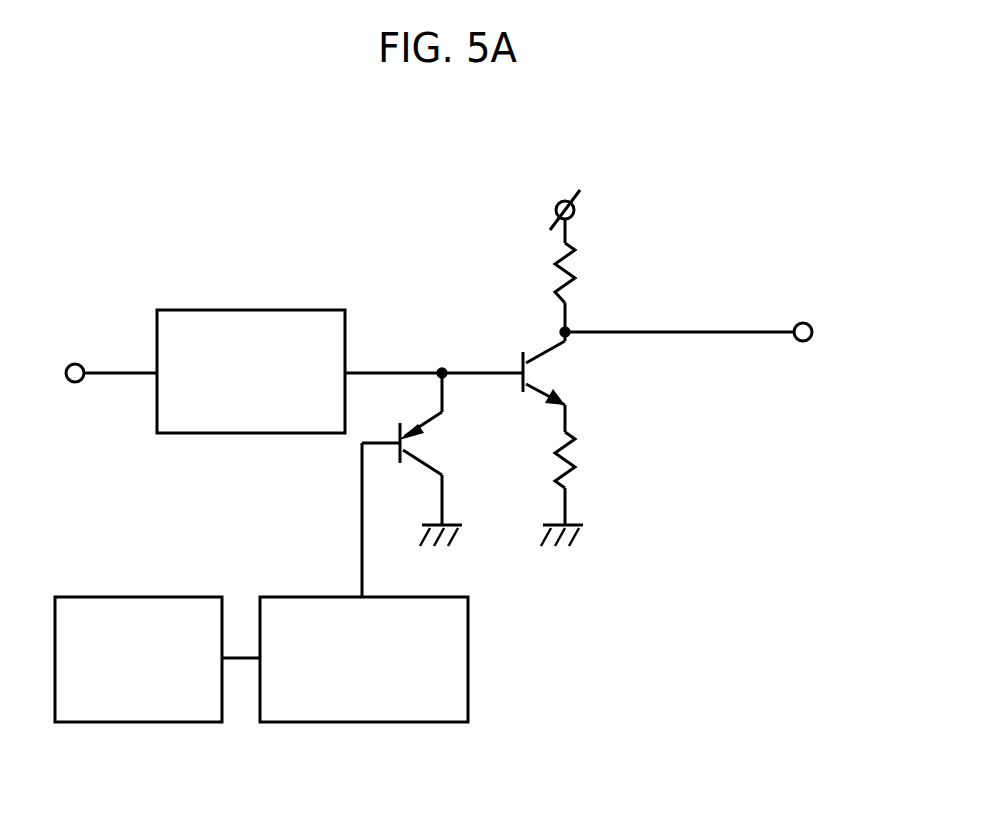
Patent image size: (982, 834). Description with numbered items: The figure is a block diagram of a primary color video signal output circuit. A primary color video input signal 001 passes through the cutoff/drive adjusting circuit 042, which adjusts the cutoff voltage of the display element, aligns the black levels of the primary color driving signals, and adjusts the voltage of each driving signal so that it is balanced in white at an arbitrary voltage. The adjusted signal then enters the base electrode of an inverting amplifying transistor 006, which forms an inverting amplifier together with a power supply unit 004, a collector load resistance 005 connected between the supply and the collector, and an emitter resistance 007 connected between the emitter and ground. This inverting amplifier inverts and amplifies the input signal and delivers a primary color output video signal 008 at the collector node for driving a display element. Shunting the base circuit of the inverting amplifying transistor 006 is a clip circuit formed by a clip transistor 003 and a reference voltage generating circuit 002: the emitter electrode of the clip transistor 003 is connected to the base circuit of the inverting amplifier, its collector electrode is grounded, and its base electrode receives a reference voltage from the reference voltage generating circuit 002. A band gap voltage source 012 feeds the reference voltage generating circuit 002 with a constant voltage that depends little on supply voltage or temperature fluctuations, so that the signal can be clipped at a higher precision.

The primary color video input signal 001 is at (83, 364).
The cutoff/drive adjusting circuit 042 is at (223, 308).
The clip transistor 003 is at (425, 456).
The inverting amplifying transistor 006 is at (536, 382).
The emitter resistance 007 is at (575, 453).
The collector load resistance 005 is at (572, 293).
The power supply unit 004 is at (573, 203).
The primary color output video signal 008 is at (811, 323).
The reference voltage generating circuit 002 is at (283, 595).
The band gap voltage source 012 is at (108, 595).